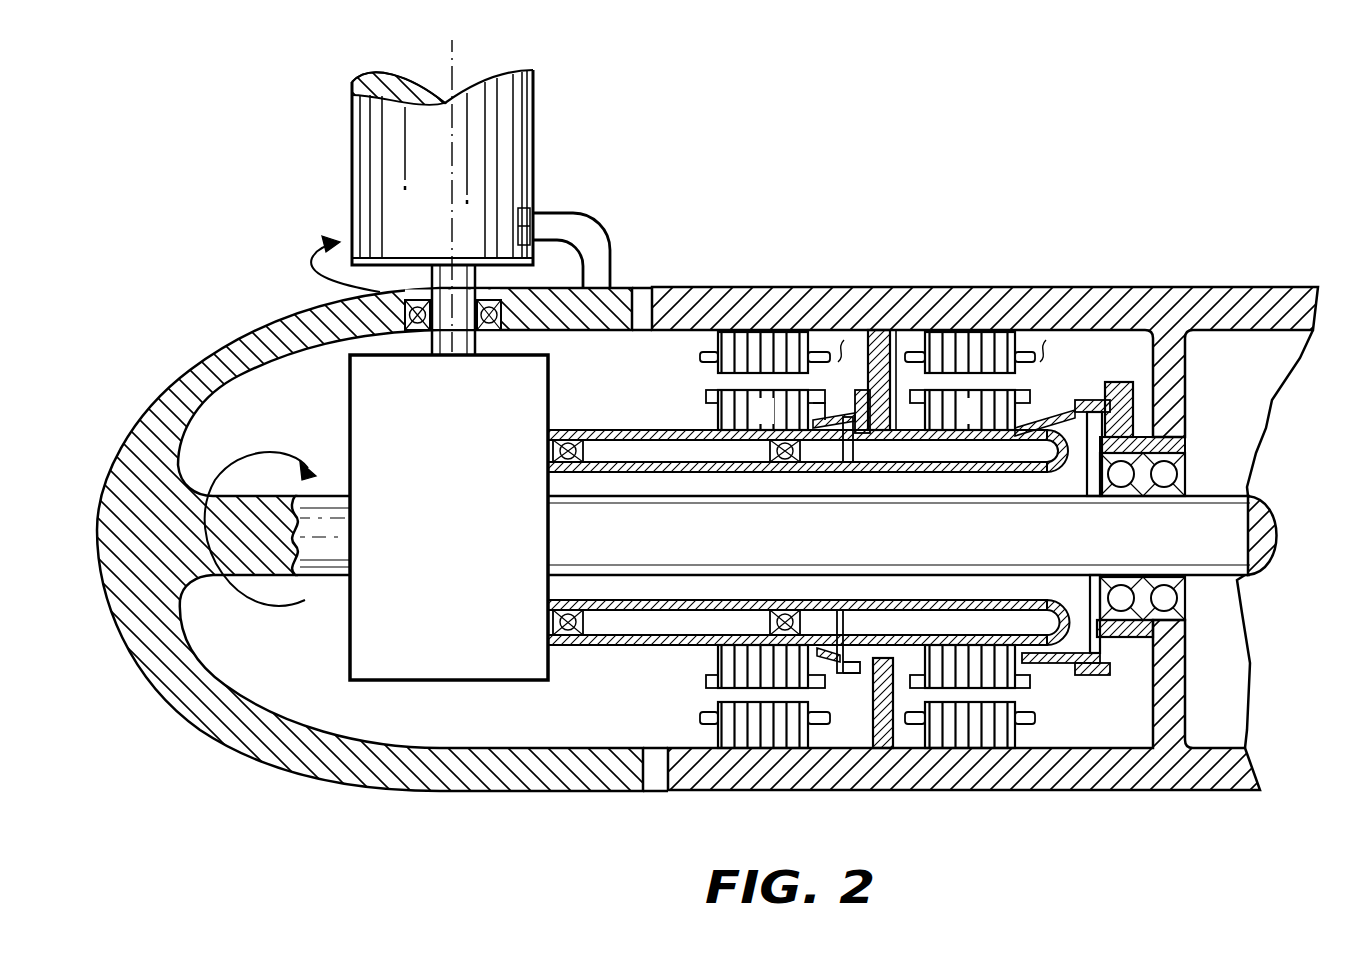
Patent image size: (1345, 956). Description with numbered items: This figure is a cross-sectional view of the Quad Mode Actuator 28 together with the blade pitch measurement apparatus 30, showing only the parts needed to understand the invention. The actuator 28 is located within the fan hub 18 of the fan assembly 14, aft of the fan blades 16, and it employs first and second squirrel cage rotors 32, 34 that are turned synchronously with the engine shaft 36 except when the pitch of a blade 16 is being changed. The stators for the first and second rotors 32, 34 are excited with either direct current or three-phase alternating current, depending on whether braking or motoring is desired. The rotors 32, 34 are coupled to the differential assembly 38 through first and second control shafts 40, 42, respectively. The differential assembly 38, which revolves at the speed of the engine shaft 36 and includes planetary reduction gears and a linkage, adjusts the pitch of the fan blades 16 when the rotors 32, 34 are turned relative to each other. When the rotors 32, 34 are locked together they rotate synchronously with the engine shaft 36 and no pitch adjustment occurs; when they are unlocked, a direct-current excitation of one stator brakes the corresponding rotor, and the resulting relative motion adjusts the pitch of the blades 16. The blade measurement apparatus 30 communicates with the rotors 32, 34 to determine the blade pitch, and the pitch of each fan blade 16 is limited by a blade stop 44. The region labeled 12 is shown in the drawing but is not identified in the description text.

The hub 12 is at (1118, 384).
The fan assembly 14 is at (297, 782).
The fan blade 16 is at (533, 110).
The fan hub 18 is at (1120, 288).
The Quad Mode Actuator 28 is at (608, 656).
The blade measurement apparatus 30 is at (857, 380).
The first squirrel cage rotor 32 is at (710, 397).
The second squirrel cage rotor 34 is at (1035, 686).
The engine shaft 36 is at (1205, 496).
The differential assembly 38 is at (465, 503).
The first control shaft 40 is at (632, 645).
The second control shaft 42 is at (698, 646).
The blade stop 44 is at (592, 238).